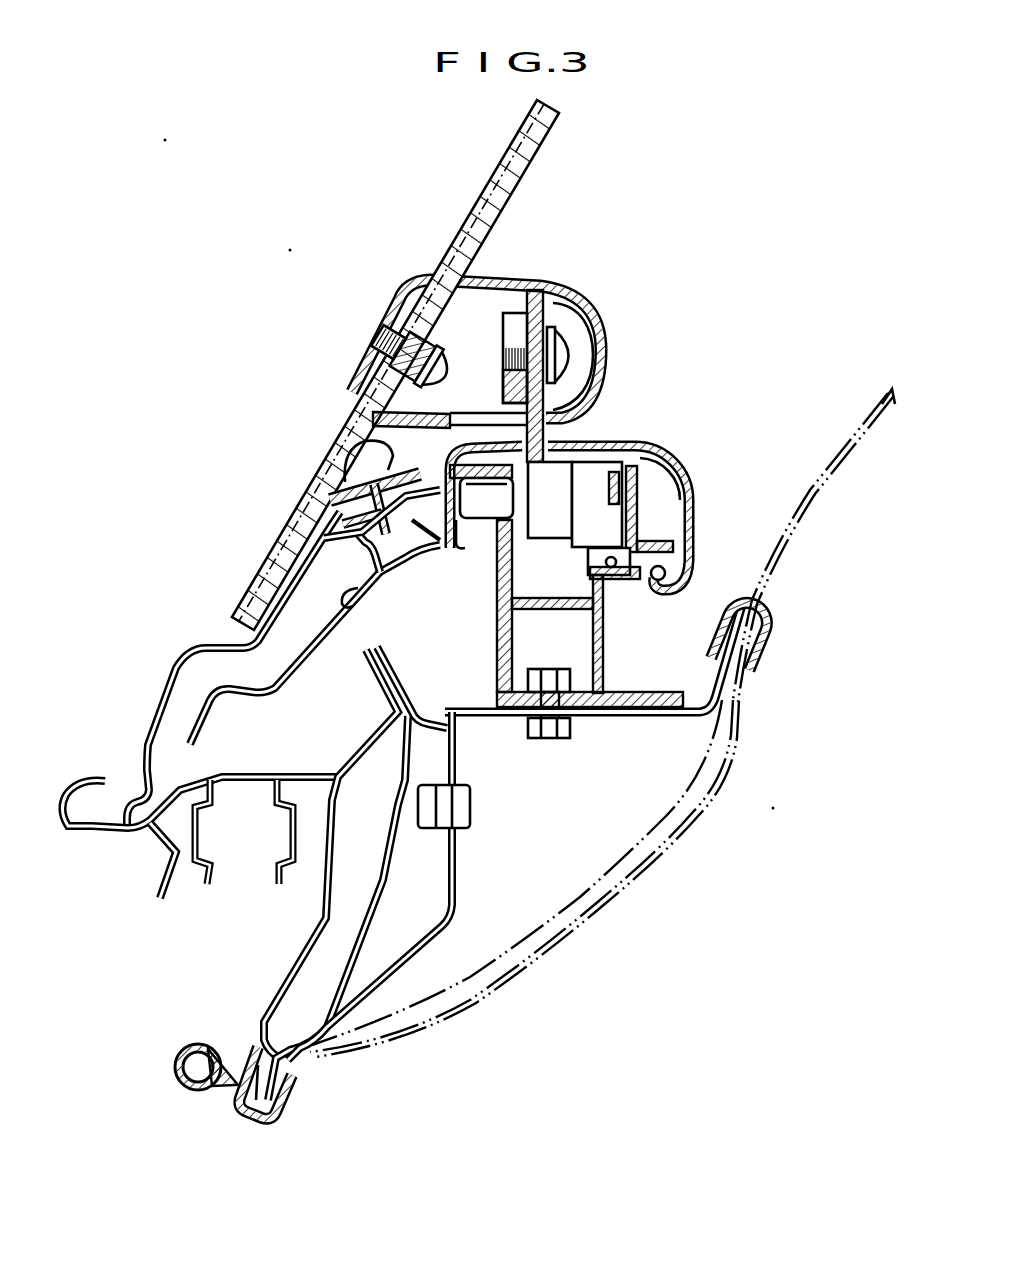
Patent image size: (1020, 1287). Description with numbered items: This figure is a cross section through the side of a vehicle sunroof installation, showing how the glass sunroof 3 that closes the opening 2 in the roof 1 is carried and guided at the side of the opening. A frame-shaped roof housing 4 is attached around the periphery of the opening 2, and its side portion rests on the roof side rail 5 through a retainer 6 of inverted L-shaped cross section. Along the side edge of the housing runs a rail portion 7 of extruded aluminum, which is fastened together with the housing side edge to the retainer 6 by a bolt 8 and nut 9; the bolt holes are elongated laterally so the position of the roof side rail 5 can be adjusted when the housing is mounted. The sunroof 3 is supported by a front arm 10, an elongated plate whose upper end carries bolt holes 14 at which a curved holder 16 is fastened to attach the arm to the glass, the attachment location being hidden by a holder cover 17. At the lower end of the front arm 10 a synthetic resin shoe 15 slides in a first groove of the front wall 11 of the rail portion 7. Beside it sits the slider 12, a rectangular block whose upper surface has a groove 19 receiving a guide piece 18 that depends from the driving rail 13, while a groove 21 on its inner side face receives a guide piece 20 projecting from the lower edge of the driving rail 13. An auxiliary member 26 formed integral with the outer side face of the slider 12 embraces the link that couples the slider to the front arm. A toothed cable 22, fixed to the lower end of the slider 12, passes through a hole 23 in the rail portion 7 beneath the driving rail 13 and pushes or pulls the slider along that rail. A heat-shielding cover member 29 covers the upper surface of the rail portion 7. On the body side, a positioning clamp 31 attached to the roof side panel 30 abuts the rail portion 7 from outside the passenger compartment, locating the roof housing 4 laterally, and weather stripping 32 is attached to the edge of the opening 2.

The roof 1 is at (179, 665).
The opening 2 is at (840, 593).
The sunroof 3 is at (462, 238).
The roof housing 4 is at (812, 473).
The roof side rail 5 is at (445, 912).
The retainer 6 is at (460, 716).
The rail portion 7 is at (486, 651).
The bolt 8 is at (566, 737).
The nut 9 is at (556, 678).
The front arm 10 is at (604, 345).
The front wall 11 is at (462, 540).
The slider 12 is at (600, 410).
The driving rail 13 is at (640, 517).
The bolt holes 14 is at (548, 300).
The shoe 15 is at (487, 507).
The holder 16 is at (540, 280).
The holder cover 17 is at (592, 322).
The guide piece 18 is at (590, 448).
The groove 19 is at (603, 485).
The guide piece 20 is at (640, 497).
The groove 21 is at (593, 563).
The toothed cable 22 is at (628, 578).
The hole 23 is at (607, 608).
The auxiliary member 26 is at (508, 560).
The heat-shielding cover member 29 is at (668, 440).
The roof side panel 30 is at (366, 606).
The positioning clamp 31 is at (420, 548).
The weather stripping 32 is at (348, 446).